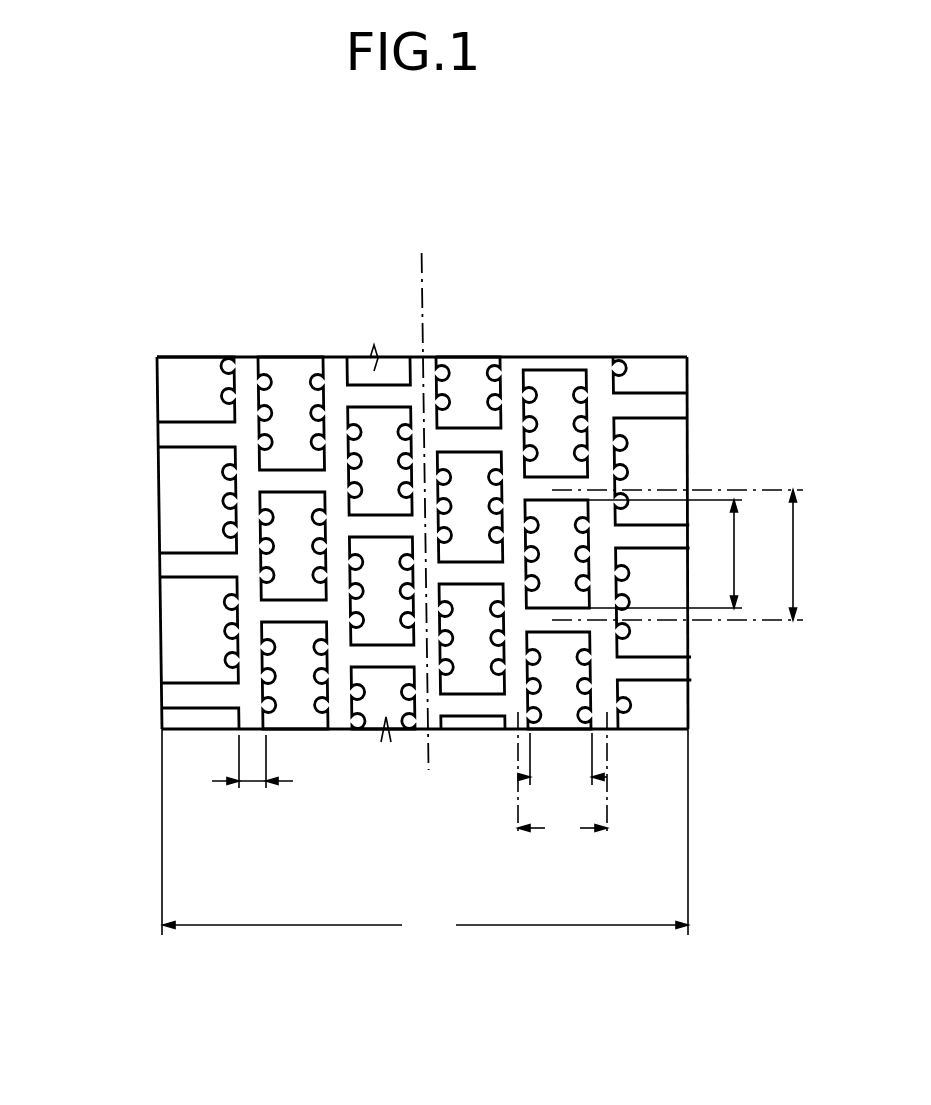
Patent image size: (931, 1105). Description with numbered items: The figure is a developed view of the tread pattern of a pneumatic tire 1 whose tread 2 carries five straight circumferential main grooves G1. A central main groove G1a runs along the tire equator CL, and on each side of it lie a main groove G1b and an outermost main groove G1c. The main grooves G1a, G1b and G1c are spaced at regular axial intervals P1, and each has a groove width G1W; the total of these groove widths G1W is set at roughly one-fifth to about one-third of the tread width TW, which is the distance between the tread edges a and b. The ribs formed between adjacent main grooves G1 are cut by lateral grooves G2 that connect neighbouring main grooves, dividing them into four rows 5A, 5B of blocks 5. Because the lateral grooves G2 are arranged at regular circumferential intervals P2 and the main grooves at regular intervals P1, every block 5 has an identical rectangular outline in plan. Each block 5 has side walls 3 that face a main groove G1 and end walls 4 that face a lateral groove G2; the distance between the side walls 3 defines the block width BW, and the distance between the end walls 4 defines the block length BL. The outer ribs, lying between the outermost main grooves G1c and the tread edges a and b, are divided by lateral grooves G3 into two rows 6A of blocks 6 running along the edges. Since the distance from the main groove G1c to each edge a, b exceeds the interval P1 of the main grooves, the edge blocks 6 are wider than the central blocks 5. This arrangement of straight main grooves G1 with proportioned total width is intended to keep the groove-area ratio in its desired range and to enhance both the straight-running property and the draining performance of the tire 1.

The pneumatic tire 1 is at (495, 492).
The tread 2 is at (663, 357).
The side walls 3 is at (348, 418).
The end walls 4 is at (292, 470).
The blocks 5 is at (480, 452).
The row of blocks 5A is at (363, 357).
The row of blocks 5B is at (295, 357).
The blocks 6 is at (141, 507).
The rows of blocks 6A is at (198, 357).
The main grooves G1 is at (600, 357).
The lateral grooves G2 is at (617, 357).
The lateral grooves G3 is at (180, 428).
The equator CL is at (422, 267).
The tread edge a is at (688, 470).
The tread edge b is at (160, 567).
The block length BL is at (667, 554).
The interval of lateral grooves P2 is at (795, 555).
The groove width G1W is at (258, 785).
The main groove G1a is at (417, 730).
The main groove G1b is at (342, 730).
The main groove G1c is at (264, 730).
The block width BW is at (562, 762).
The interval of main grooves P1 is at (562, 779).
The tread width TW is at (425, 834).